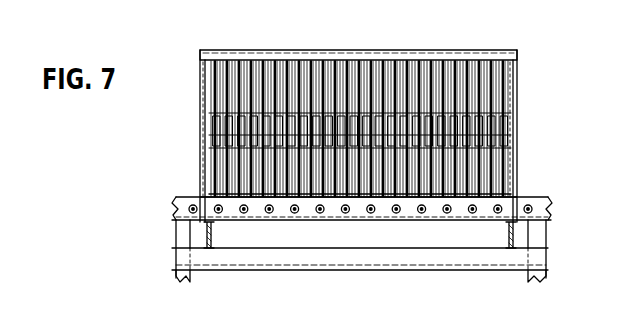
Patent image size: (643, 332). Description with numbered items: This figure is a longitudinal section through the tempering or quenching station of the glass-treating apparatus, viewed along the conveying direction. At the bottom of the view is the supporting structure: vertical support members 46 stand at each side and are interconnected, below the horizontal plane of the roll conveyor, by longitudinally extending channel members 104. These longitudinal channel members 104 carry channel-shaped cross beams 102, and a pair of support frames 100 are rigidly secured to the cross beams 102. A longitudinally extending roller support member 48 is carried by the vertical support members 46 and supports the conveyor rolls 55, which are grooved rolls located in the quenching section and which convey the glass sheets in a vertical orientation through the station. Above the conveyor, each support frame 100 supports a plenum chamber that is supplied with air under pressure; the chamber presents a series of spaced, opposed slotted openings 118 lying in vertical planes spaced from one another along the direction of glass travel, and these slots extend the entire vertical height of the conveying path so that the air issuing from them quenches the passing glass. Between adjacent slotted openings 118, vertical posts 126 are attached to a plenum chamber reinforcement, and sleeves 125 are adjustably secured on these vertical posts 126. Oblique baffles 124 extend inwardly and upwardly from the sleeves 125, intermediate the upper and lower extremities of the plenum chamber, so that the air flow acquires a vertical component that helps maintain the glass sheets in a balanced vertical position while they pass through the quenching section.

The vertical support members 46 is at (176, 235).
The roller support member 48 is at (197, 197).
The rolls 55 is at (293, 213).
The support frames 100 is at (196, 113).
The cross beams 102 is at (211, 238).
The longitudinally extending channel members 104 is at (323, 260).
The slotted openings 118 is at (493, 103).
The oblique baffles 124 is at (280, 110).
The sleeves 125 is at (423, 197).
The vertical posts 126 is at (472, 175).